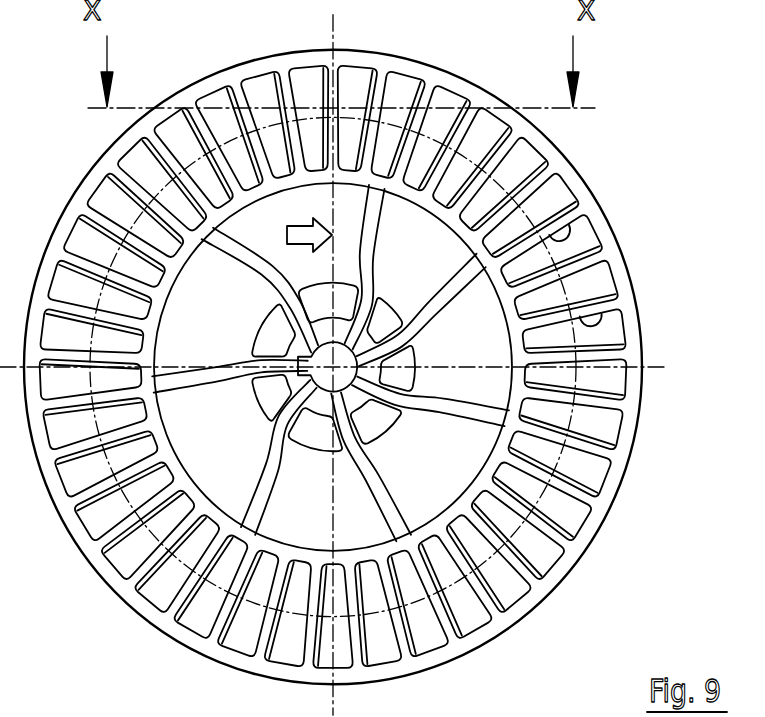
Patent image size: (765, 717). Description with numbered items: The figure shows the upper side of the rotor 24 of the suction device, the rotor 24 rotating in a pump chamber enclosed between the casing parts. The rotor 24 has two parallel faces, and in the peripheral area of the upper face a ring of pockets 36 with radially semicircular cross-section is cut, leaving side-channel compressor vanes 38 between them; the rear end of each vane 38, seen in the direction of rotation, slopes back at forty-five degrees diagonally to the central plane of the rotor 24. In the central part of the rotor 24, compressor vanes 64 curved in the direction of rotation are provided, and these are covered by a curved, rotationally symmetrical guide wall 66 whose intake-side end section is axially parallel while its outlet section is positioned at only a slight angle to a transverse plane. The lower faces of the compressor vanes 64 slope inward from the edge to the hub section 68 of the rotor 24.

The rotor 24 is at (599, 178).
The pockets 36 is at (600, 345).
The side-channel compressor vanes 38 is at (642, 312).
The compressor vanes 64 is at (517, 562).
The guide wall 66 is at (472, 560).
The hub section 68 is at (260, 320).